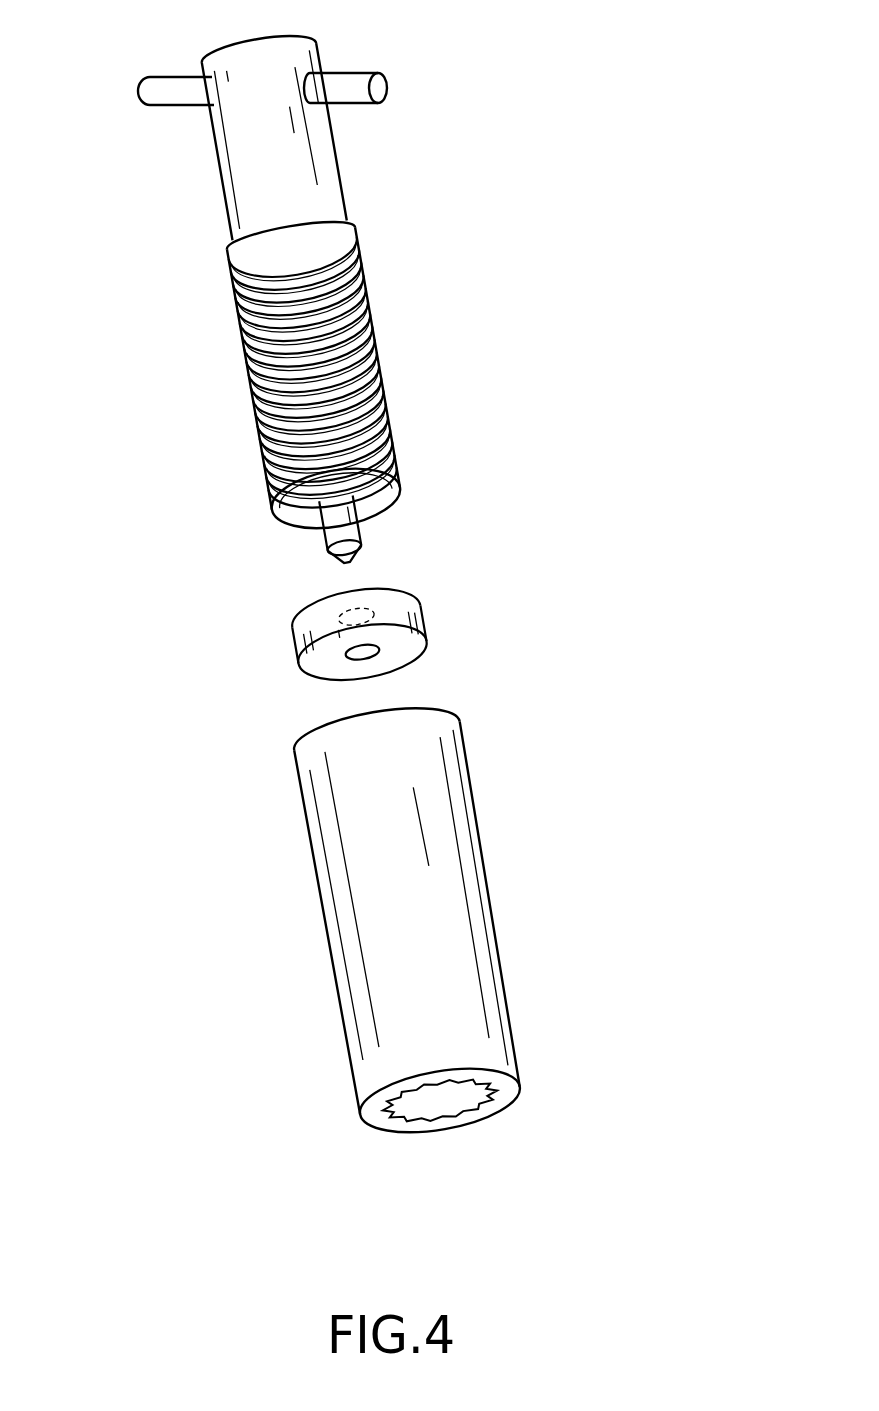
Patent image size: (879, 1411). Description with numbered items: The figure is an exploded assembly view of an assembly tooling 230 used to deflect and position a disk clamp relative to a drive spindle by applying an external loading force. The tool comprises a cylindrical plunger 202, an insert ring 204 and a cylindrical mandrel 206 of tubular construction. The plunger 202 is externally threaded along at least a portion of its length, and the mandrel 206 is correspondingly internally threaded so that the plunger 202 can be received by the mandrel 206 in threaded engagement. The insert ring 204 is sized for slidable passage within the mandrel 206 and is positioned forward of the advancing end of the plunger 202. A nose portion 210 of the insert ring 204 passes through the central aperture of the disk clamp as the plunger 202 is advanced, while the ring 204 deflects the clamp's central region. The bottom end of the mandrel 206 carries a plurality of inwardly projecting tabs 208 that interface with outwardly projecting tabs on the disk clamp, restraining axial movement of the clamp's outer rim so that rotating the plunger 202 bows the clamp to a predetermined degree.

The tool assembly 230 is at (287, 622).
The cylindrical plunger 202 is at (299, 282).
The insert ring 204 is at (359, 634).
The cylindrical mandrel 206 is at (409, 920).
The inwardly projecting tabs 208 is at (440, 1100).
The nose portion 210 is at (341, 531).